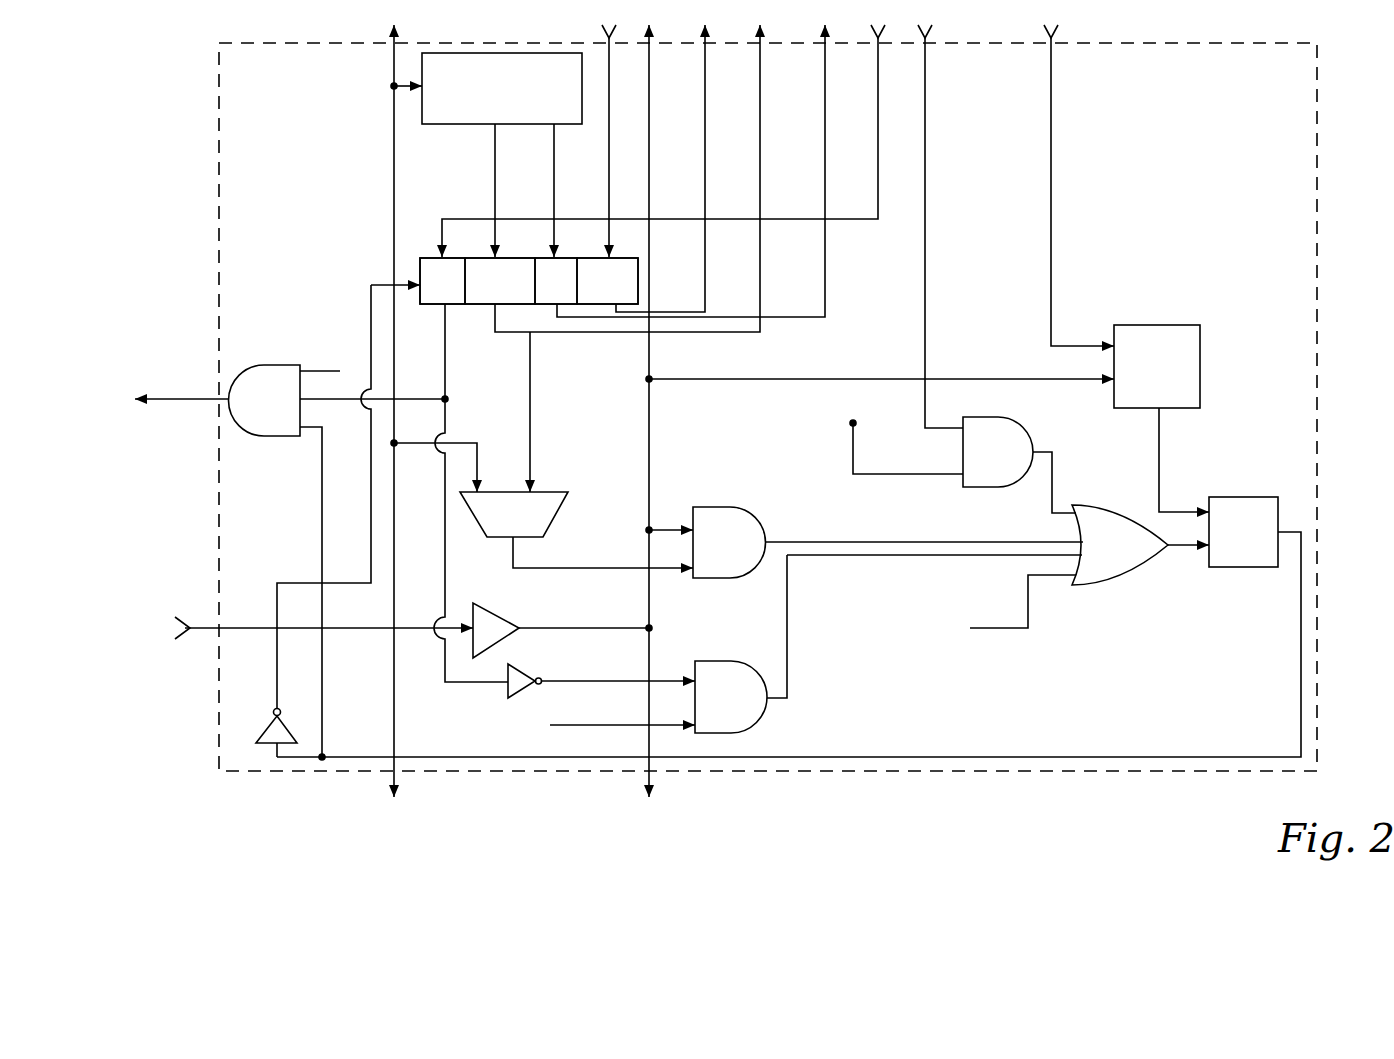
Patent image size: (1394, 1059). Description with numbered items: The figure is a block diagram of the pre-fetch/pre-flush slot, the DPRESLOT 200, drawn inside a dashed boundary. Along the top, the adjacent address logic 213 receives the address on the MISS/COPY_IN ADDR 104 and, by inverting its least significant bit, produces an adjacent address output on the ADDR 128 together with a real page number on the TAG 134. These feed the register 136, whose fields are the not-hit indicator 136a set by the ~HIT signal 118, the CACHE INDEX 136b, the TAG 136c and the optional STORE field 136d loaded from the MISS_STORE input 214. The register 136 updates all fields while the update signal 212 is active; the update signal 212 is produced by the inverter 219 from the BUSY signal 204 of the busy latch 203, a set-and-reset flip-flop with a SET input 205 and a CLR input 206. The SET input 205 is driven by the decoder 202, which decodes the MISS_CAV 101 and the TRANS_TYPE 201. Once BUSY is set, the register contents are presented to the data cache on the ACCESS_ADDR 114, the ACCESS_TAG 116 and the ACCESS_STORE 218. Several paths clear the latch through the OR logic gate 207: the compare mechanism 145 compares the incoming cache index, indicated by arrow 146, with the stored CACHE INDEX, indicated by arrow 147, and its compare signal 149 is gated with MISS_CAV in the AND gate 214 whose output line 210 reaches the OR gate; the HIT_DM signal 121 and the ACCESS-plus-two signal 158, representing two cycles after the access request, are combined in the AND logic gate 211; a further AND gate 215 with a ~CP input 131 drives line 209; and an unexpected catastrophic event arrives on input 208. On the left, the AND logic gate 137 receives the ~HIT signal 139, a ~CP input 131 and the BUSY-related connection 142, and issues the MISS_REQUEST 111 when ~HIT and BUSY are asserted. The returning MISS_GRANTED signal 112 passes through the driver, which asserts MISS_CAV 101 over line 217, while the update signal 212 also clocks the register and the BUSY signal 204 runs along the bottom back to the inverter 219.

The pre-fetch/pre-flush slot (DPRESLOT) 200 is at (1181, 21).
The MISS/COPY_IN ADDR 104 is at (392, 774).
The adjacent address logic 213 is at (444, 68).
The ADDR 128 is at (493, 160).
The TAG 134 is at (553, 133).
The MISS_STORE input / AND gate 214 is at (612, 100).
The ACCESS_STORE 218 is at (704, 48).
The ACCESS_ADDR 114 is at (760, 130).
The ACCESS_TAG 116 is at (825, 140).
The ~HIT signal 118 is at (878, 87).
The HIT_DM signal 121 is at (925, 173).
The TRANS_TYPE 201 is at (1050, 97).
The register 136 is at (625, 258).
The not hit (~HIT) indicator 136a is at (442, 305).
The cache index (CACHE INDEX) 136b is at (487, 255).
The real address tag (TAG) 136c is at (545, 262).
The miss type store (STORE) 136d is at (598, 267).
The AND logic gate 137 is at (275, 372).
The MISS_REQUEST 111 is at (192, 402).
The ~CP line 131 is at (340, 370).
The feedback line 142 is at (322, 530).
The update signal 212 is at (367, 450).
The ~HIT signal 139 is at (447, 352).
The cache index input (reference arrow) 146 is at (476, 434).
The CACHE INDEX input (reference arrow) 147 is at (532, 428).
The compare mechanism 145 is at (498, 520).
The compare signal 149 is at (577, 567).
The MISS_CAV 101 is at (645, 778).
The buffer output line 217 is at (572, 626).
The MISS_GRANTED signal 112 is at (203, 637).
The inverter 219 is at (278, 733).
The AND gate 215 is at (723, 673).
The ACCESS_+2 signal 158 is at (852, 440).
The AND logic gate 211 is at (1020, 437).
The AND output line 210 is at (968, 539).
The AND output line 209 is at (922, 557).
The unexpected event input 208 is at (1028, 603).
The OR logic gate 207 is at (1100, 573).
The CLR input 206 is at (1185, 543).
The SET input 205 is at (1160, 463).
The busy latch 203 is at (1270, 505).
The decoder 202 is at (1172, 338).
The BUSY signal 204 is at (1103, 757).